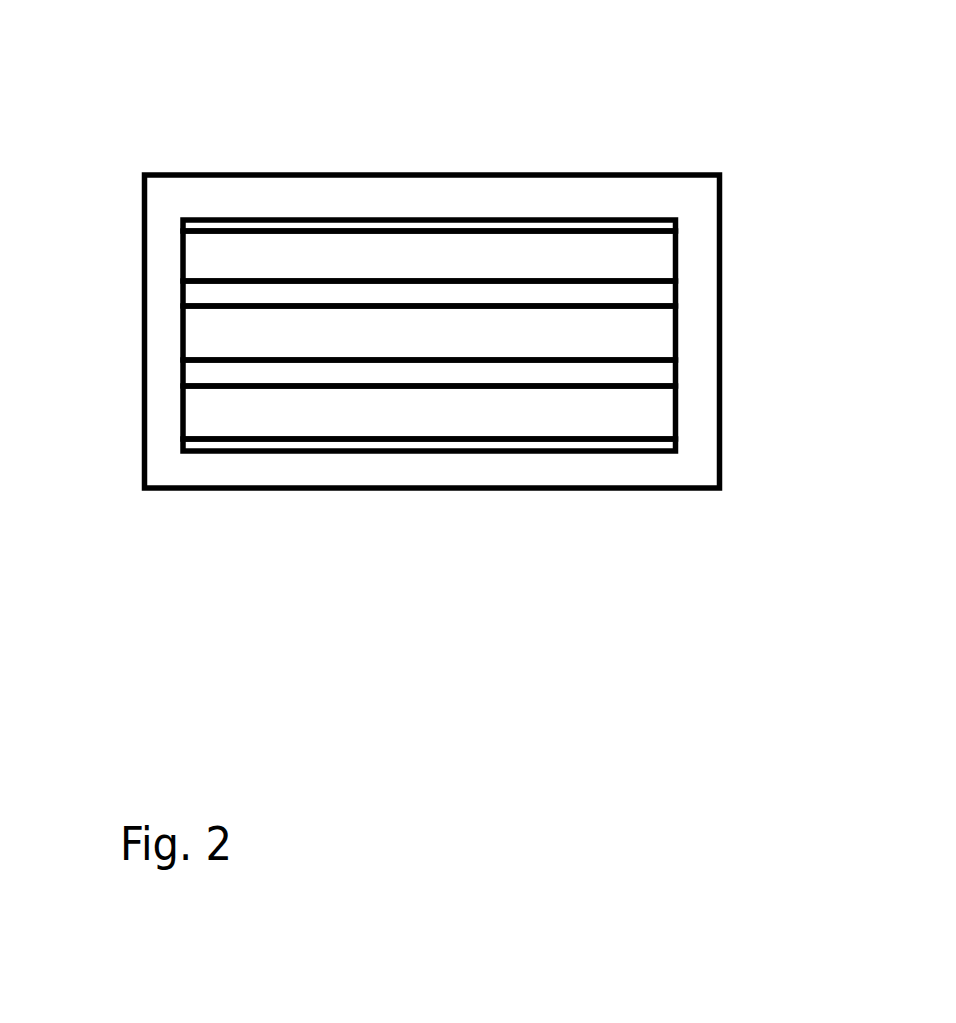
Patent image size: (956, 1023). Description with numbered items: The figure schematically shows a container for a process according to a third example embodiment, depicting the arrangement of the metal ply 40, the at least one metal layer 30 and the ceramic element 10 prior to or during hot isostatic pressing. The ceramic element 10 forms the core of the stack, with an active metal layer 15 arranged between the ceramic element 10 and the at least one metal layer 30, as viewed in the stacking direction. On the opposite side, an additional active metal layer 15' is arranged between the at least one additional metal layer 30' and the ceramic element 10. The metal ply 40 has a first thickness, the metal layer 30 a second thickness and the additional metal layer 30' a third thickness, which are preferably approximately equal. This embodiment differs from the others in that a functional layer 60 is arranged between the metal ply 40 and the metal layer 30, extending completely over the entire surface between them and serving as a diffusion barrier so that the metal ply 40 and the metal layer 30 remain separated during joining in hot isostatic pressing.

The ceramic element 10 is at (197, 323).
The active metal layer 15 is at (492, 254).
The additional active metal layer 15' is at (494, 362).
The metal layer 30 is at (429, 157).
The additional metal layer 30' is at (429, 491).
The metal ply 40 is at (627, 190).
The functional layer 60 is at (652, 225).